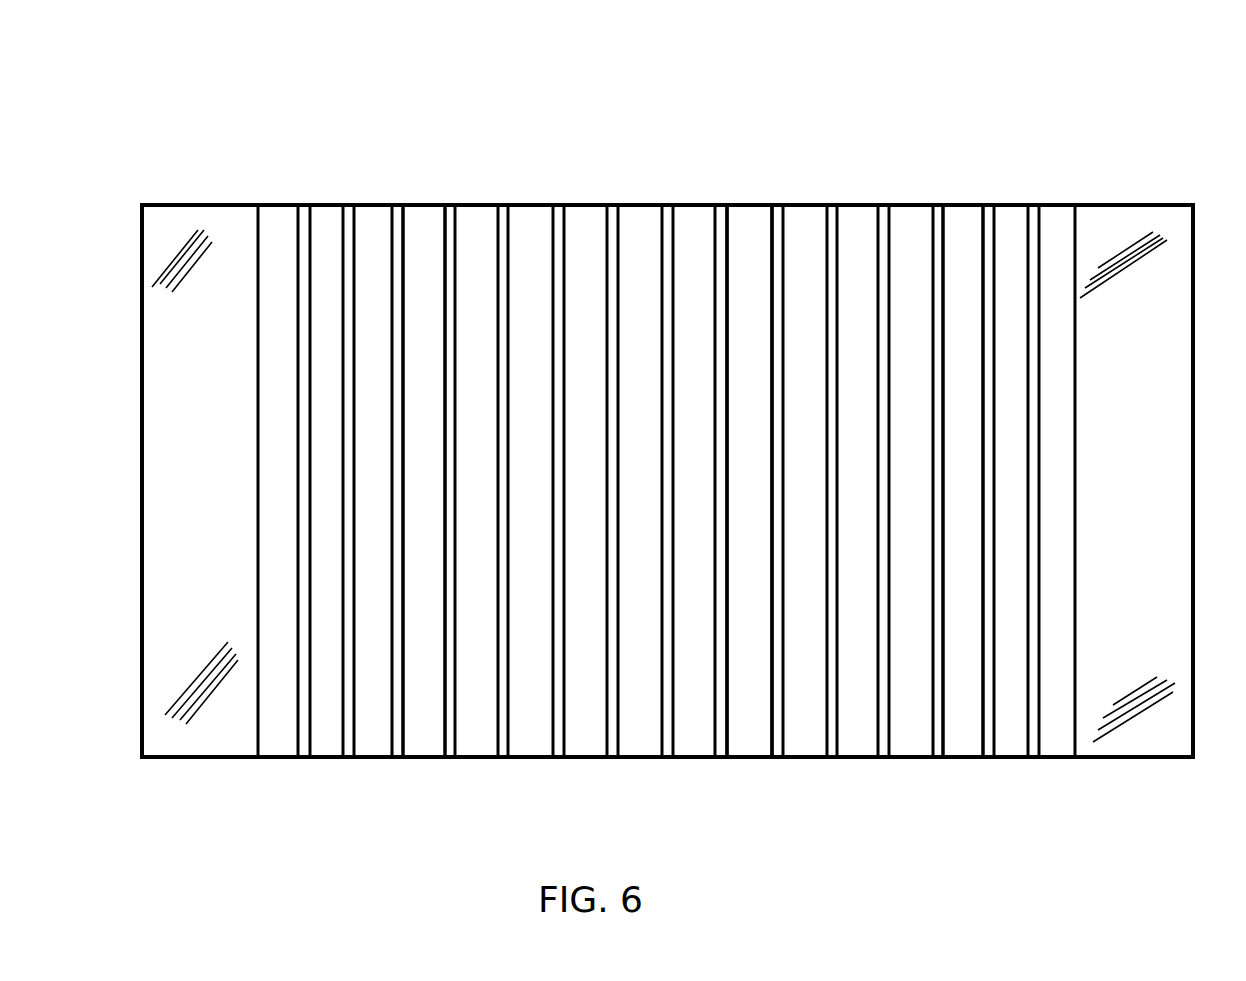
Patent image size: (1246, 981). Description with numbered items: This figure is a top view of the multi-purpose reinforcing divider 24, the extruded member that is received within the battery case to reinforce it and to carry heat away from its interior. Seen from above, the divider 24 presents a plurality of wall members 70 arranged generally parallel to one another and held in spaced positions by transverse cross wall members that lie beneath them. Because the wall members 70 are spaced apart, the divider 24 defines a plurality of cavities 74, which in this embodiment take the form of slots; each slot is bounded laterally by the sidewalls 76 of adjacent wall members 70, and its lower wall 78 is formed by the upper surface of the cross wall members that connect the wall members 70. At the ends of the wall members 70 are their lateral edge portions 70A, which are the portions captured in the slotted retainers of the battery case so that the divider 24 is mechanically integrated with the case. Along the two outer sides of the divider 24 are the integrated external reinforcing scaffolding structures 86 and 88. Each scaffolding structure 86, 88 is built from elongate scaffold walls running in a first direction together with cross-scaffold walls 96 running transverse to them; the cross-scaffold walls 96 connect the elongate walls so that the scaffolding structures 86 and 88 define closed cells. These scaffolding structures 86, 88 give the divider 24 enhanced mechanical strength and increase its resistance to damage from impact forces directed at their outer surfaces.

The reinforcing divider 24 is at (684, 124).
The reinforcing scaffolding structure 86 is at (191, 164).
The reinforcing scaffolding structure 88 is at (1125, 150).
The cross-scaffold walls 96 is at (243, 244).
The wall members 70 is at (348, 218).
The lateral edge portions 70A is at (398, 205).
The cavities 74 is at (437, 212).
The sidewalls 76 is at (772, 733).
The lower wall 78 is at (955, 722).